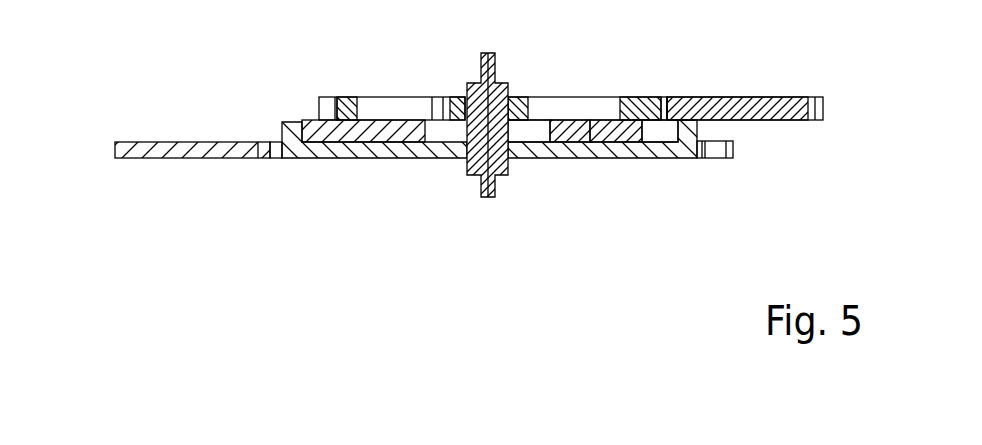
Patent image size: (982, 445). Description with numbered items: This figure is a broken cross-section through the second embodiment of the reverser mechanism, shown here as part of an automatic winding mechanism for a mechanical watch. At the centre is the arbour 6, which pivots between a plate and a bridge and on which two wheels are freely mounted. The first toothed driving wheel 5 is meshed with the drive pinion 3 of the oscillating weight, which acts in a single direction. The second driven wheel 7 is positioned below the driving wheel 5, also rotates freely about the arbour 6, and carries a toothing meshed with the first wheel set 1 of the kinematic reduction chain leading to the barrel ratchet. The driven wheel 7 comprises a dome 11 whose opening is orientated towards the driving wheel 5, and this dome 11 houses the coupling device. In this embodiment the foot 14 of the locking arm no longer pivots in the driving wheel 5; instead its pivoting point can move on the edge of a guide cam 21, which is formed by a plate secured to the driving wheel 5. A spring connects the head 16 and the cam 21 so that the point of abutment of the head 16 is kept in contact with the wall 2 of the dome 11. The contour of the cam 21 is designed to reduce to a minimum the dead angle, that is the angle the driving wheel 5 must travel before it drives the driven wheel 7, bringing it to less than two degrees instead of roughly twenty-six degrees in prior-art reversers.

The first wheel set 1 is at (170, 148).
The wall 2 is at (659, 125).
The drive pinion 3 is at (749, 107).
The first toothed driving wheel 5 is at (633, 110).
The arbour 6 is at (503, 103).
The second driven wheel 7 is at (666, 150).
The dome 11 is at (545, 121).
The foot 14 is at (571, 133).
The head 16 is at (348, 137).
The guide cam 21 is at (616, 138).